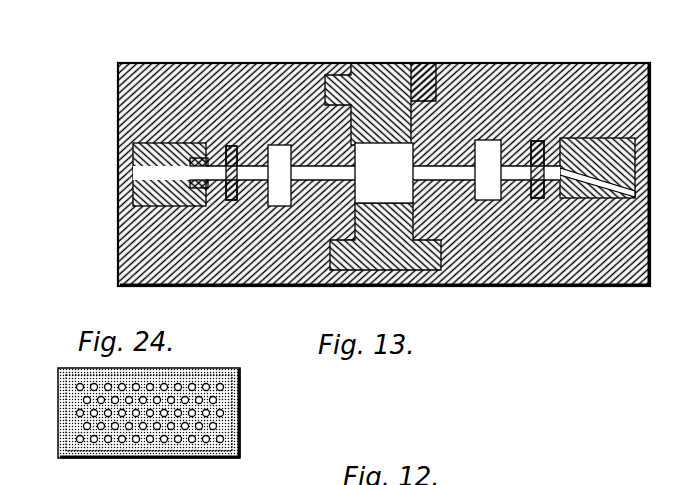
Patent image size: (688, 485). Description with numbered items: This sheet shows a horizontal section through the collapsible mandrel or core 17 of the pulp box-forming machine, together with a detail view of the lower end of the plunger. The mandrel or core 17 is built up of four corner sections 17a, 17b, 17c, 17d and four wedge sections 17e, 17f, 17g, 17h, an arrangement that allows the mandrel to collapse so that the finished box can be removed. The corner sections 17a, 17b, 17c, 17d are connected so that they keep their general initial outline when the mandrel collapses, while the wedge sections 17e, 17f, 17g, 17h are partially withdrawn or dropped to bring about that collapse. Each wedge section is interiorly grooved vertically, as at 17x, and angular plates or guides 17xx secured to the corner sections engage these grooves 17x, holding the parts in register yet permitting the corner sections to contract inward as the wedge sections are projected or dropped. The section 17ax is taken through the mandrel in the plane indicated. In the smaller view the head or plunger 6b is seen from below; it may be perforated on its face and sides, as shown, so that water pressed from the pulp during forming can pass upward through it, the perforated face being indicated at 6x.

In FIG. 13, the mandrel or core 17 is at (384, 190).
In FIG. 13, the corner section 17a is at (202, 42).
In FIG. 13, the corner section 17b is at (574, 40).
In FIG. 13, the corner section 17c is at (198, 160).
In FIG. 13, the corner section 17d is at (218, 278).
In FIG. 13, the wedge section 17e is at (609, 276).
In FIG. 13, the wedge section 17f is at (377, 60).
In FIG. 13, the wedge section 17g is at (628, 162).
In FIG. 13, the wedge section 17h is at (394, 268).
In FIG. 13, the vertical groove 17x is at (409, 91).
In FIG. 13, the angular plate or guide 17xx is at (137, 193).
In FIG. 13, the channel and cavities 17ax is at (517, 165).
In FIG. 24, the head or plunger 6b is at (233, 383).
In FIG. 24, the plate frame 6x is at (232, 417).